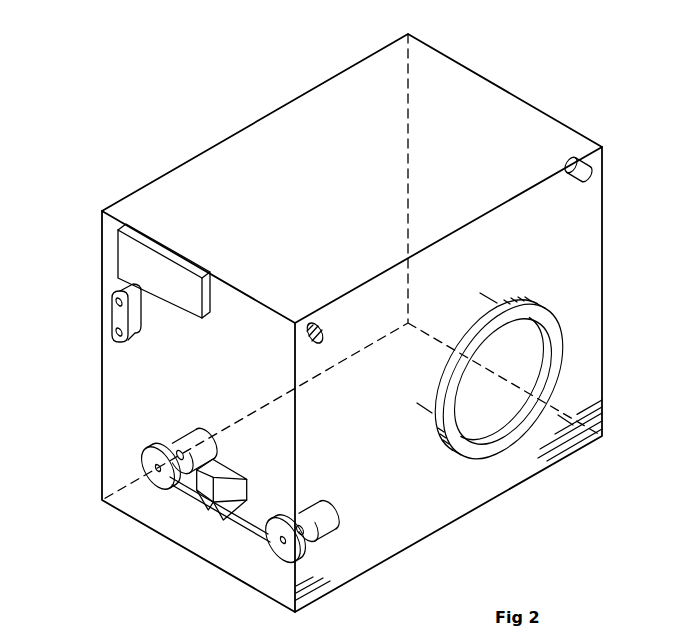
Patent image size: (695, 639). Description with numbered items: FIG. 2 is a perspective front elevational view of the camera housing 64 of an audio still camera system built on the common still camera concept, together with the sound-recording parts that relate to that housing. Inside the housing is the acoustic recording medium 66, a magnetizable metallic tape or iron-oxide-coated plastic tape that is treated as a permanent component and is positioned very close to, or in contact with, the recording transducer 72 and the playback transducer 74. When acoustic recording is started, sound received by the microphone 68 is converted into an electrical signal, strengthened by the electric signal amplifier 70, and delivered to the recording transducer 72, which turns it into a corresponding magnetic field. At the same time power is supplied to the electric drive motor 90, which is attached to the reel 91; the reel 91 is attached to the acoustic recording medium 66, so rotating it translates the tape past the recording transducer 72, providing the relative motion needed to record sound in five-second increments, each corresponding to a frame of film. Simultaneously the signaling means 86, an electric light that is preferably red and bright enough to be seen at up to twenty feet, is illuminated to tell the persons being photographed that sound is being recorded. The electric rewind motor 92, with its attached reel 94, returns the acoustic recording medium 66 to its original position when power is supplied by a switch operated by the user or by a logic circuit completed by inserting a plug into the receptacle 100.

The camera housing 64 is at (498, 81).
The acoustic recording medium 66 is at (242, 528).
The microphone 68 is at (306, 322).
The electric signal amplifier 70 is at (187, 278).
The recording transducer 72 is at (250, 488).
The playback transducer 74 is at (221, 458).
The signaling means 86 is at (593, 182).
The electric drive motor 90 is at (177, 437).
The reel attached to drive motor 91 is at (157, 484).
The electric rewind motor 92 is at (318, 533).
The reel attached to rewind motor 94 is at (283, 560).
The receptacle 100 is at (110, 312).